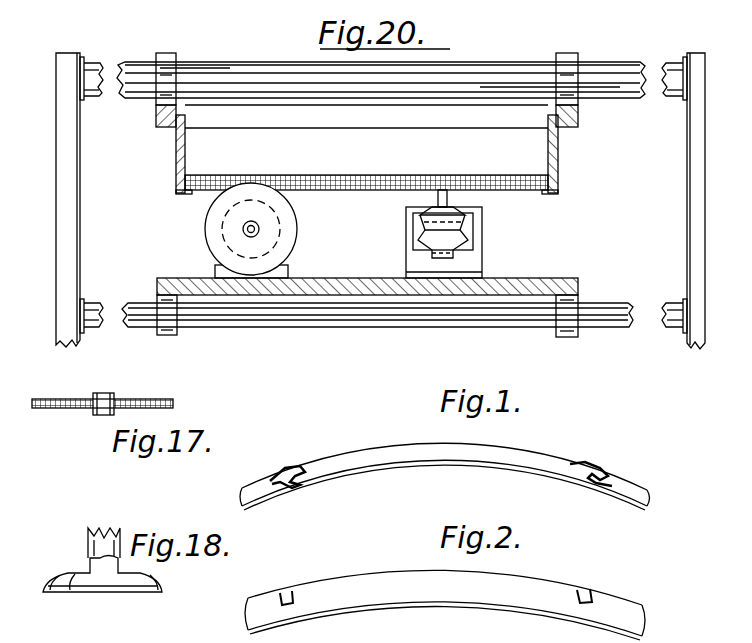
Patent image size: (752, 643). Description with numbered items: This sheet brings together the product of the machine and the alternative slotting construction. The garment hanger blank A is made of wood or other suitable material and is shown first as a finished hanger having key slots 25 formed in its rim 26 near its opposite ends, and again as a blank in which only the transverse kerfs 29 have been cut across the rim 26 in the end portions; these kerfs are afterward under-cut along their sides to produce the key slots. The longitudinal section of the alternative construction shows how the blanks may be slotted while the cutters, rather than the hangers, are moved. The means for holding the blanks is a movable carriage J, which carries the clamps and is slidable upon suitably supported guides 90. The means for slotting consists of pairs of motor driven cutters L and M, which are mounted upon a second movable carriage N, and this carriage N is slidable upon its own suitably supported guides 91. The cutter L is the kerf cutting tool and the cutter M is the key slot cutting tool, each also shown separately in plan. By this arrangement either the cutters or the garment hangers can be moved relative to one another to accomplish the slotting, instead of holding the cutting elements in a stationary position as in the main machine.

In FIG. 20, the guides 90 is at (617, 92).
In FIG. 20, the guides 91 is at (613, 305).
In FIG. 20, the movable carriage J is at (396, 118).
In FIG. 20, the motor driven cutter L is at (298, 229).
In FIG. 17, the motor driven cutter L is at (63, 408).
In FIG. 20, the motor driven cutter M is at (462, 228).
In FIG. 18, the motor driven cutter M is at (80, 590).
In FIG. 20, the movable carriage N is at (367, 298).
In FIG. 20, the garment hanger blank A is at (210, 190).
In FIG. 1, the garment hanger blank A is at (526, 456).
In FIG. 2, the garment hanger blank A is at (437, 590).
In FIG. 1, the key slots 25 is at (290, 466).
In FIG. 1, the rim 26 is at (386, 445).
In FIG. 2, the rim 26 is at (383, 568).
In FIG. 2, the transverse kerfs 29 is at (290, 590).